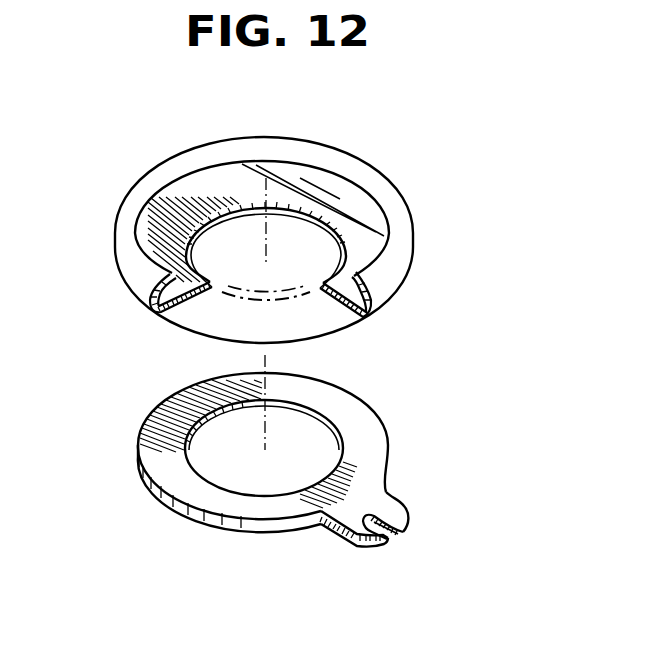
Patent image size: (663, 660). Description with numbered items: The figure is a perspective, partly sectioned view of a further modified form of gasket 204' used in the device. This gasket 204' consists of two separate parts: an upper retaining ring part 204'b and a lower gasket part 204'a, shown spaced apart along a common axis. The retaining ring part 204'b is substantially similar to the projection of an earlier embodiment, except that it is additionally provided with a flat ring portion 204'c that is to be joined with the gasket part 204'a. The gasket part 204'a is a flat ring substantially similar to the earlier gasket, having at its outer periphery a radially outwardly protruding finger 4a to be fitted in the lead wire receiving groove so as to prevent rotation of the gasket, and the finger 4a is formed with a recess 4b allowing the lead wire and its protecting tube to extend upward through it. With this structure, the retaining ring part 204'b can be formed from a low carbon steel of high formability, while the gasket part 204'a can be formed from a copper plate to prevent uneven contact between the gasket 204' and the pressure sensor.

The gasket 204' is at (336, 360).
The retaining ring part 204'b is at (319, 244).
The flat ring portion 204'c is at (310, 311).
The gasket part 204'a is at (337, 469).
The finger 4a is at (393, 504).
The recess 4b is at (389, 536).